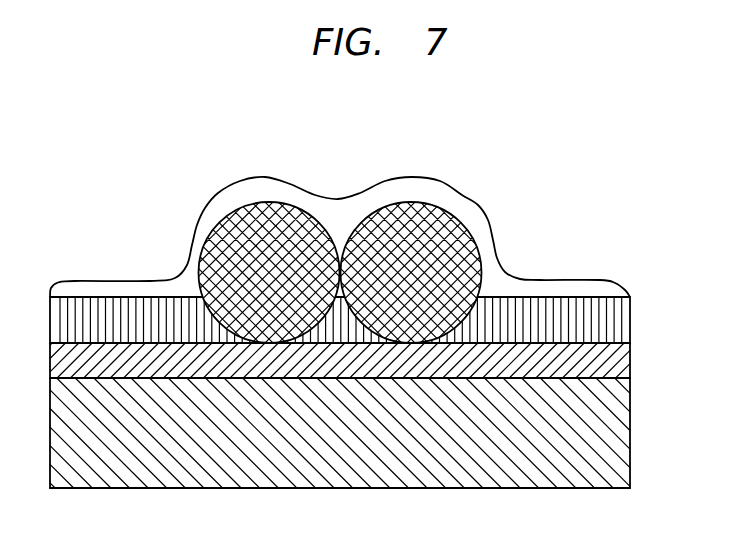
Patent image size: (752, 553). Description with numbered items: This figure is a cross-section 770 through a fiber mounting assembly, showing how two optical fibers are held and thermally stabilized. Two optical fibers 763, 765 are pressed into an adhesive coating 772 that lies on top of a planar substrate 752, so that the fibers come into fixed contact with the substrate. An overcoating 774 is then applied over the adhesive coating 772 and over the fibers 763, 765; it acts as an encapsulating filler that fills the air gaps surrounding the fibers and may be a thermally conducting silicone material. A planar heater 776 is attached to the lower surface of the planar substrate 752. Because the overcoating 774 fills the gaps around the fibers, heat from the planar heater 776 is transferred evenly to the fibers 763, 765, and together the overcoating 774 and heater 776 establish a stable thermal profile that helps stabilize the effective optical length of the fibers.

The cross-section 770 is at (380, 108).
The planar heater 776 is at (630, 440).
The planar substrate 752 is at (630, 362).
The adhesive coating 772 is at (630, 322).
The optical fiber 763 is at (280, 206).
The optical fiber 765 is at (445, 211).
The overcoating 774 is at (513, 278).